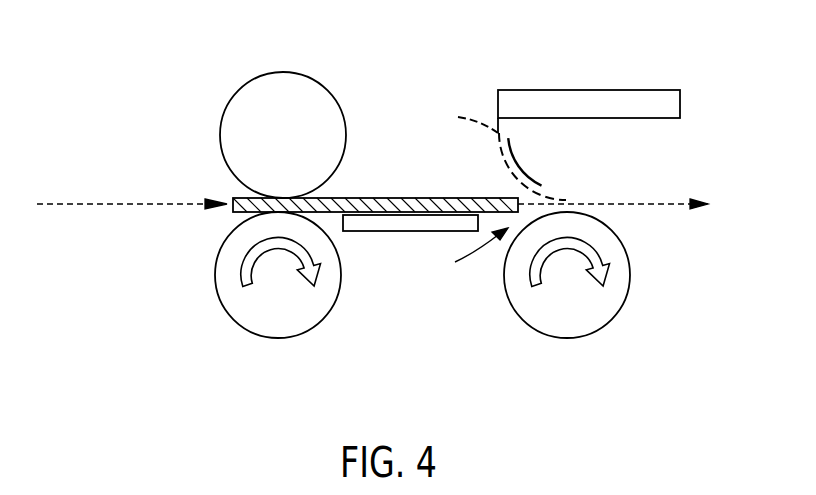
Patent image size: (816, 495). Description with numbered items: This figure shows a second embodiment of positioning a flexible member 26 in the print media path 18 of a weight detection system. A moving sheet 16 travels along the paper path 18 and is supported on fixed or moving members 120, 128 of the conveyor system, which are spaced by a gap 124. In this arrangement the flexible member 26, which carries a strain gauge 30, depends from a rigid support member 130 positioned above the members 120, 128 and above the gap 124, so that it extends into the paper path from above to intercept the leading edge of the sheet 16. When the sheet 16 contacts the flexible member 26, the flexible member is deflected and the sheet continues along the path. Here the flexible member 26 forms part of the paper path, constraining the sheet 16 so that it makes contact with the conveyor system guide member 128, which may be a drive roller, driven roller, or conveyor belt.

The print media path 18 is at (105, 201).
The moving sheet 16 is at (400, 198).
The flexible member 26 is at (499, 153).
The strain gauge 30 is at (525, 168).
The rigid support member 130 is at (650, 98).
The fixed/moving member 120 is at (383, 231).
The gap 124 is at (462, 253).
The conveyor system guide member 128 is at (565, 338).